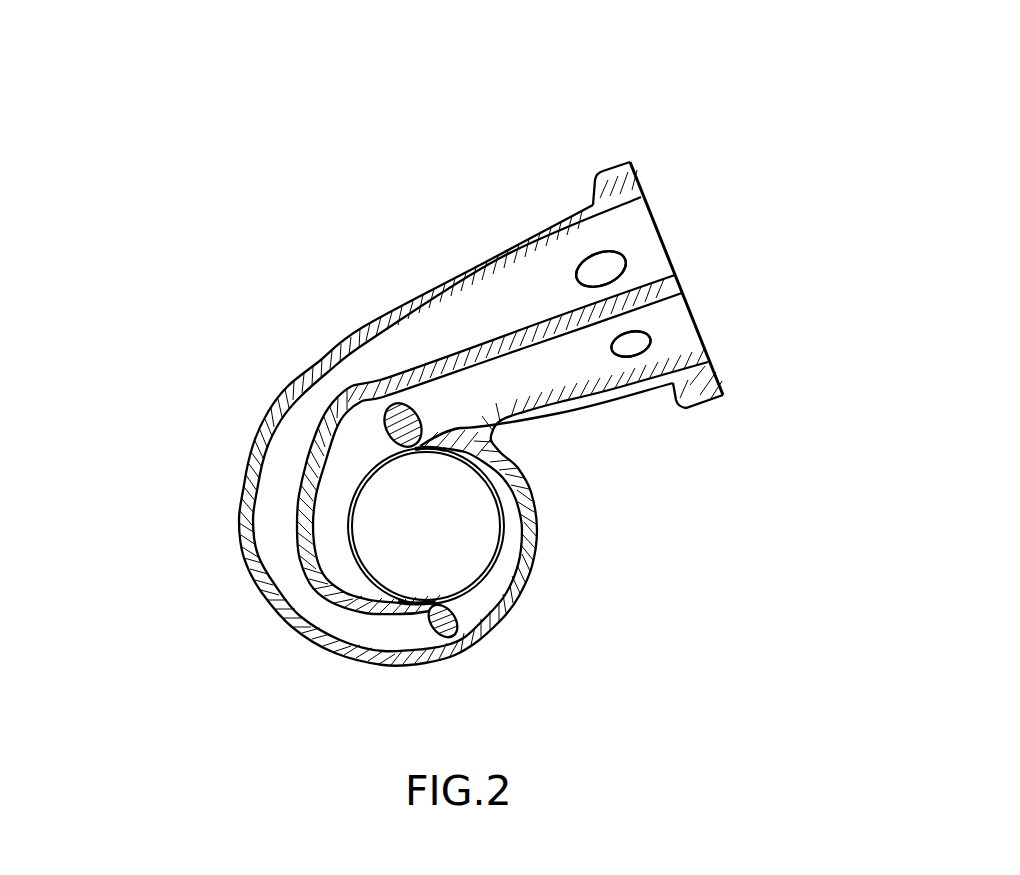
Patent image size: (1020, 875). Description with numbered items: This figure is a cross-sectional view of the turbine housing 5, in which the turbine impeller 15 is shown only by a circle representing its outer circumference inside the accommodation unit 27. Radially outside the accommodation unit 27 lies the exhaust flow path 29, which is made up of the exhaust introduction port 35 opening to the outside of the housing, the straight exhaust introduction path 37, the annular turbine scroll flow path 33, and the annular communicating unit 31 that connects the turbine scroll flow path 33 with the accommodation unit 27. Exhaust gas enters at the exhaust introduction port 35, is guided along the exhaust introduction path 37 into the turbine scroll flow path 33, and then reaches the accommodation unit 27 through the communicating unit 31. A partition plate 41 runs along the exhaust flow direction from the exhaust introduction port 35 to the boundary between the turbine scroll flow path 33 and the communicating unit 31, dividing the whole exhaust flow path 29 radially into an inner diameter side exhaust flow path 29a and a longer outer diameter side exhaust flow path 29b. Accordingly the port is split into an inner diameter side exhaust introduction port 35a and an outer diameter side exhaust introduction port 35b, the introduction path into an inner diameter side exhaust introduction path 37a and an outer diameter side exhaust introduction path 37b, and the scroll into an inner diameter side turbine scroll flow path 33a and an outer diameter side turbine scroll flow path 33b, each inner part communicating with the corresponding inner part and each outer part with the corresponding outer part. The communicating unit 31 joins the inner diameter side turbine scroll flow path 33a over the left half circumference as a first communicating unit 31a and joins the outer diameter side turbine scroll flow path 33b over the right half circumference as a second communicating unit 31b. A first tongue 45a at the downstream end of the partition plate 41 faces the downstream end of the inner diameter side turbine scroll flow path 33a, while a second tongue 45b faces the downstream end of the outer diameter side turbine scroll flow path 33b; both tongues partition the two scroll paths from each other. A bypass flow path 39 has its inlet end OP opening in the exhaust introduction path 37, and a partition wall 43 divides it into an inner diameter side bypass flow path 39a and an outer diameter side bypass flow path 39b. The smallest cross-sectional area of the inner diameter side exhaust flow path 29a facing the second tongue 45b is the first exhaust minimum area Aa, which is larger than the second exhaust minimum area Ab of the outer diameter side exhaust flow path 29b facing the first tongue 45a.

The turbine housing 5 is at (363, 327).
The turbine impeller 15 is at (500, 523).
The accommodation unit 27 is at (440, 538).
The exhaust flow path 29 is at (156, 531).
The inner diameter side exhaust flow path 29a is at (332, 527).
The outer diameter side exhaust flow path 29b is at (280, 547).
The communicating unit 31 is at (497, 552).
The first communicating unit 31a is at (353, 577).
The second communicating unit 31b is at (498, 572).
The turbine scroll flow path 33 is at (201, 364).
The inner diameter side turbine scroll flow path 33a is at (340, 478).
The outer diameter side turbine scroll flow path 33b is at (282, 507).
The exhaust introduction port 35 is at (678, 197).
The inner diameter side exhaust introduction port 35a is at (703, 328).
The outer diameter side exhaust introduction port 35b is at (670, 238).
The exhaust introduction path 37 is at (438, 159).
The inner diameter side exhaust introduction path 37a is at (562, 368).
The outer diameter side exhaust introduction path 37b is at (517, 278).
The bypass flow path 39 is at (515, 100).
The inner diameter side bypass flow path 39a is at (633, 356).
The outer diameter side bypass flow path 39b is at (593, 252).
The partition plate 41 is at (477, 348).
The partition wall 43 is at (623, 317).
The first tongue 45a is at (420, 610).
The second tongue 45b is at (425, 425).
The first exhaust minimum area Aa is at (383, 403).
The second exhaust minimum area Ab is at (455, 637).
The inlet end OP is at (610, 252).